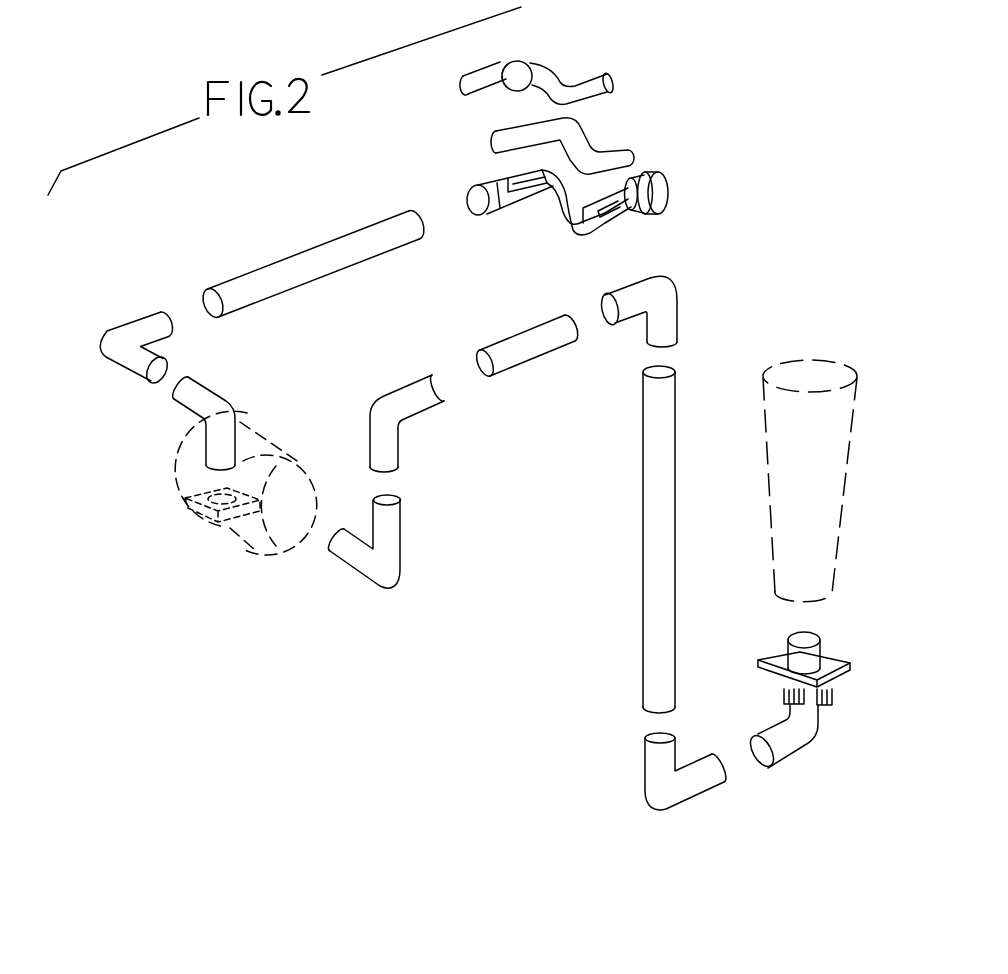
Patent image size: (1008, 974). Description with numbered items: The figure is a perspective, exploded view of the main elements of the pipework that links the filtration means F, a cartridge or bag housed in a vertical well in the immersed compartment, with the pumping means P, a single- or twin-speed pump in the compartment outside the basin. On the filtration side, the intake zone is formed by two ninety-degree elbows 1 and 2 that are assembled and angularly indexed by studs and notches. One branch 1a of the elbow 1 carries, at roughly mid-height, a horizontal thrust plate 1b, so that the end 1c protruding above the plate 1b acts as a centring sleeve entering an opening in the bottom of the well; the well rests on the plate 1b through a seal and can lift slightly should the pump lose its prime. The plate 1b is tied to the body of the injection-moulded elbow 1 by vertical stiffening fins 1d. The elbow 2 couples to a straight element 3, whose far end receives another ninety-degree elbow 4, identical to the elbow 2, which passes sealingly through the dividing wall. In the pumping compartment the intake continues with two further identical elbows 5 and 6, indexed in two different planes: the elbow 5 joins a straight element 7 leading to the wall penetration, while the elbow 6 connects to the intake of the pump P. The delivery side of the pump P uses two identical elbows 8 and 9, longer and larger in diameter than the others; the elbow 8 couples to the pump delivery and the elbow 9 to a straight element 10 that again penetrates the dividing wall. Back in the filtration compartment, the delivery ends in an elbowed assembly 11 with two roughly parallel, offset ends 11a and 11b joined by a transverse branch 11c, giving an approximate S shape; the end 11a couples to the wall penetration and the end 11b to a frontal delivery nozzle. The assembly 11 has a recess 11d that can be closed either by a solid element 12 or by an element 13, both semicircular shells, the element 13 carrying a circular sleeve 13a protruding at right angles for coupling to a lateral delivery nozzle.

The 90° elbow 1 is at (804, 748).
The branch of the elbow 1a is at (800, 704).
The horizontal thrust plate 1b is at (835, 675).
The centring sleeve 1c is at (810, 650).
The vertical stiffening fins 1d is at (822, 705).
The 90° elbow 2 is at (665, 790).
The straight element 3 is at (648, 517).
The 90° elbow 4 is at (668, 305).
The 90° elbow 5 is at (395, 400).
The 90° elbow 6 is at (375, 575).
The straight element 7 is at (530, 345).
The 90° elbow 8 is at (205, 391).
The 90° elbow 9 is at (152, 325).
The straight element 10 is at (318, 243).
The elbowed assembly 11 is at (567, 235).
The end of the elbowed assembly 11a is at (493, 185).
The end of the elbowed assembly 11b is at (670, 193).
The transverse branch 11c is at (632, 217).
The recess 11d is at (614, 214).
The solid element 12 is at (623, 140).
The shutting-off element 13 is at (593, 75).
The circular sleeve 13a is at (522, 60).
The pumping means P is at (282, 538).
The filtration means F is at (812, 368).